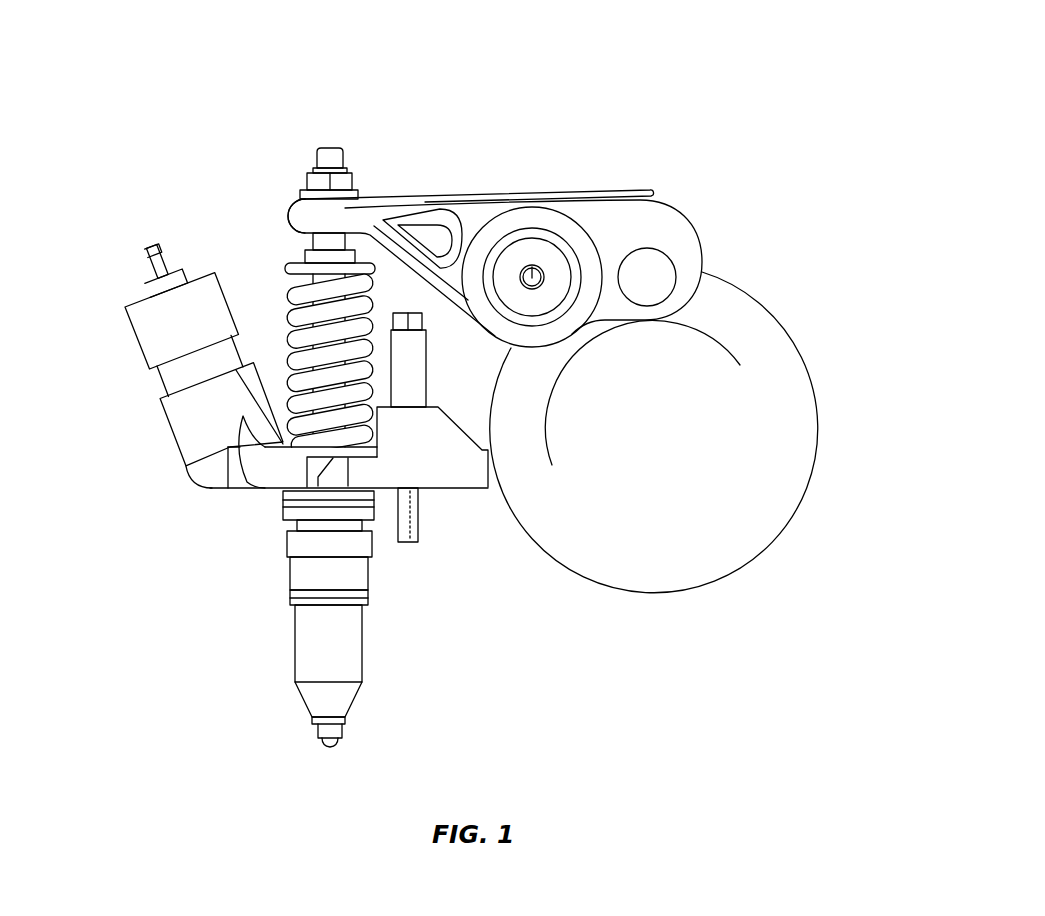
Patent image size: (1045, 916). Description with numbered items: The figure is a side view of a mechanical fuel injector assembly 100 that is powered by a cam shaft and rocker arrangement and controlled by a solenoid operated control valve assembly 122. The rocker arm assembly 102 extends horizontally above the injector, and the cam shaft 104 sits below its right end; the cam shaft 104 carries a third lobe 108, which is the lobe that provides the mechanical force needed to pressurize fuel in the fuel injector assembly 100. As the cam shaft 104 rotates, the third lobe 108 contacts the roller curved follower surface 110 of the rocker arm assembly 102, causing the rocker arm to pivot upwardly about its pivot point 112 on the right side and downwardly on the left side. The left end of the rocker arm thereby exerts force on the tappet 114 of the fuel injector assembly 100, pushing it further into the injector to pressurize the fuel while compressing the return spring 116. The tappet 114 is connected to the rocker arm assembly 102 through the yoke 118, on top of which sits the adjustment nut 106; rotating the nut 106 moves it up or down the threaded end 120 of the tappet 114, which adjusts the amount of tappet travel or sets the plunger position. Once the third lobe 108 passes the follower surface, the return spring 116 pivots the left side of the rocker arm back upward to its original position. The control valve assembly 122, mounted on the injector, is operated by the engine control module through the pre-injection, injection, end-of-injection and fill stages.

The fuel injector assembly 100 is at (685, 62).
The rocker arm assembly 102 is at (462, 194).
The cam shaft 104 is at (712, 279).
The adjustment nut 106 is at (305, 183).
The third lobe 108 is at (578, 356).
The roller curved follower surface 110 is at (667, 323).
The pivot point 112 is at (534, 271).
The tappet 114 is at (313, 256).
The return spring 116 is at (285, 348).
The yoke 118 is at (305, 220).
The threaded end 120 is at (328, 157).
The control valve assembly 122 is at (122, 341).